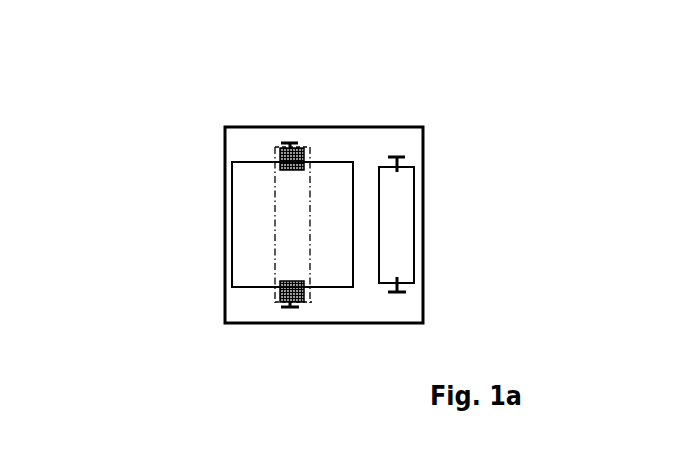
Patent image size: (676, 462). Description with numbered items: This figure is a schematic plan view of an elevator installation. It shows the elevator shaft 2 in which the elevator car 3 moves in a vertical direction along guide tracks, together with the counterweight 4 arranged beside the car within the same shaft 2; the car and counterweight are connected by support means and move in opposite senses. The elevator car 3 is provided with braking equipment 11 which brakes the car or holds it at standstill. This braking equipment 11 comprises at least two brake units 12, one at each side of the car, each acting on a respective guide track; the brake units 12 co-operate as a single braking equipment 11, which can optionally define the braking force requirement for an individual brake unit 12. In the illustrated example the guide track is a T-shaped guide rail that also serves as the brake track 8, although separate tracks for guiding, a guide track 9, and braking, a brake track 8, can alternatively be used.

The shaft 2 is at (353, 141).
The elevator car 3 is at (253, 223).
The counterweight 4 is at (397, 220).
The brake track 8 is at (288, 143).
The guide track 9 is at (290, 307).
The braking equipment 11 is at (288, 247).
The brake unit 12 is at (282, 160).